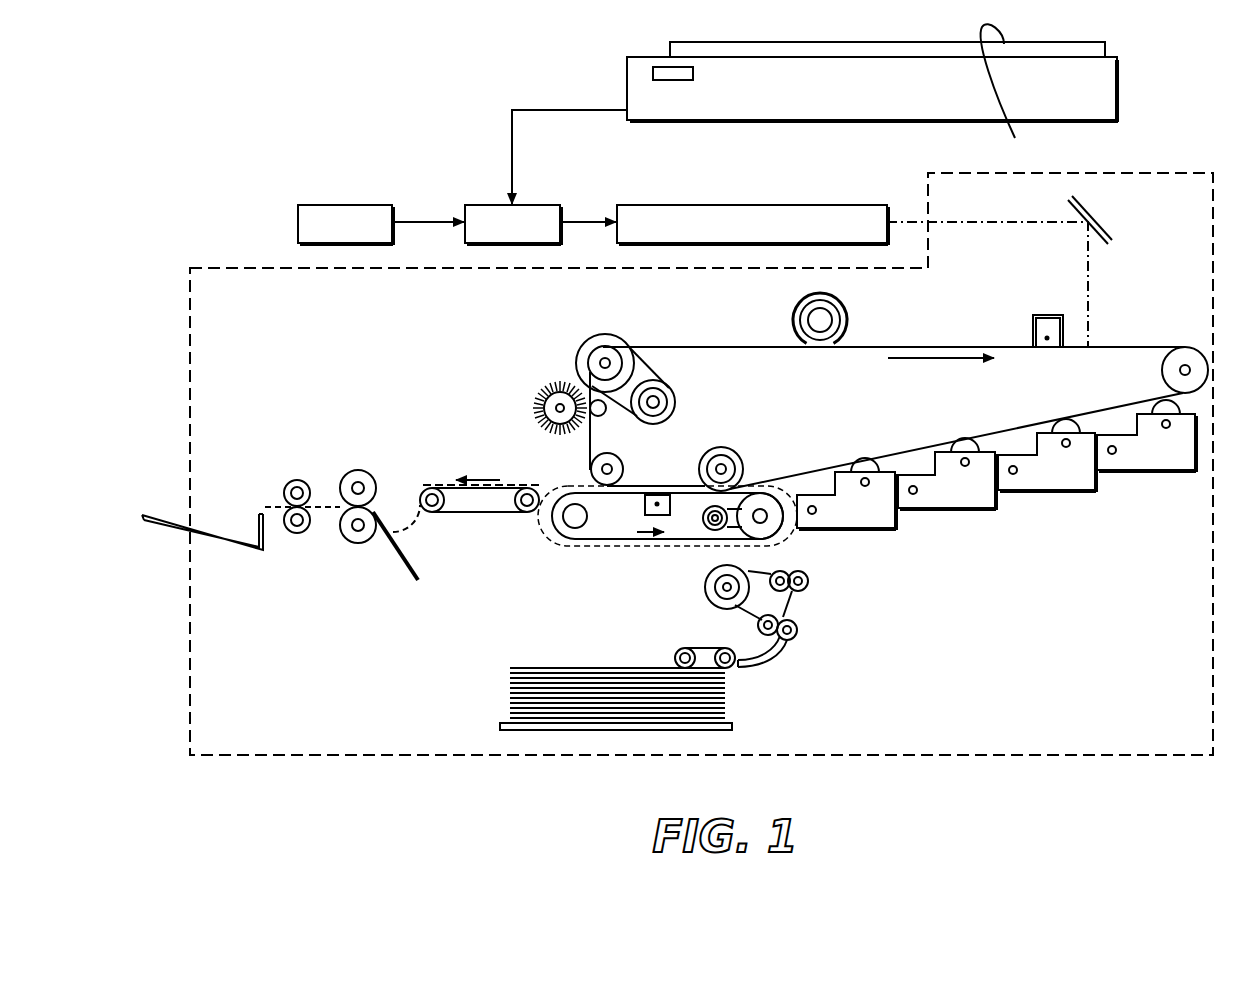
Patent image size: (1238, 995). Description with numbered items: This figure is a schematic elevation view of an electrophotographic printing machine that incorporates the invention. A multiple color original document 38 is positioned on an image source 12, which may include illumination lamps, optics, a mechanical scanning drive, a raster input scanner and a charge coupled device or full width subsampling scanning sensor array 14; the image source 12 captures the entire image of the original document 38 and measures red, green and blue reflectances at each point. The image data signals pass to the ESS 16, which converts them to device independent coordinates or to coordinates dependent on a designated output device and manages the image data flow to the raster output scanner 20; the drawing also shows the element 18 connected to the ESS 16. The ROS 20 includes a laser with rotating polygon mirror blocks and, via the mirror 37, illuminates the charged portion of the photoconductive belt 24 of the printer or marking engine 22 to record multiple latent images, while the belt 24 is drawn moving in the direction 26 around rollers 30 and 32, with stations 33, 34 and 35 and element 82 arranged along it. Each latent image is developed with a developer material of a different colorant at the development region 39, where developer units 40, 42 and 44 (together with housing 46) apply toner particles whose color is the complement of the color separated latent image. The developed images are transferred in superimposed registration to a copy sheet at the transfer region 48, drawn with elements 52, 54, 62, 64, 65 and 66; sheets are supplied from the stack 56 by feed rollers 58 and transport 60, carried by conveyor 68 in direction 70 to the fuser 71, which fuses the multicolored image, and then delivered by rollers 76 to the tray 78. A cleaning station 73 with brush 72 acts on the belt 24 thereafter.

The image source 12 is at (611, 100).
The scanning sensor array 14 is at (666, 80).
The ESS 16 is at (465, 184).
The user interface (UI) 18 is at (327, 184).
The raster output scanner 20 is at (847, 196).
The marking engine 22 is at (1151, 163).
The photoconductive belt 24 is at (975, 346).
The direction of belt movement 26 is at (939, 363).
The drive roller 30 is at (592, 347).
The tension roller 32 is at (675, 397).
The charging station 33 is at (1031, 304).
The corona generating device 34 is at (1054, 314).
The exposure station 35 is at (1106, 317).
The mirror 37 is at (1102, 226).
The original document 38 is at (1006, 95).
The development station 39 is at (996, 492).
The developer unit 40 is at (1163, 462).
The developer unit 42 is at (1060, 480).
The developer unit 44 is at (958, 500).
The developer housing 46 is at (858, 520).
The transfer station 48 is at (685, 548).
The transfer roller 52 is at (770, 523).
The transfer belt 54 is at (686, 546).
The paper stack / supply tray 56 is at (538, 673).
The feed rollers 58 is at (704, 645).
The sheet transport rollers 60 is at (790, 604).
The direction of transfer belt movement 62 is at (653, 542).
The backup roller 64 is at (670, 479).
The transfer zone 65 is at (679, 499).
The bias transfer roll 66 is at (645, 507).
The conveyor 68 is at (481, 514).
The direction of conveyor movement 70 is at (488, 475).
The fuser rollers 71 is at (363, 467).
The cleaning brush 72 is at (533, 405).
The cleaning station 73 is at (545, 387).
The exit rollers 76 is at (300, 479).
The output tray 78 is at (228, 545).
The erase / charge lamp 82 is at (842, 314).